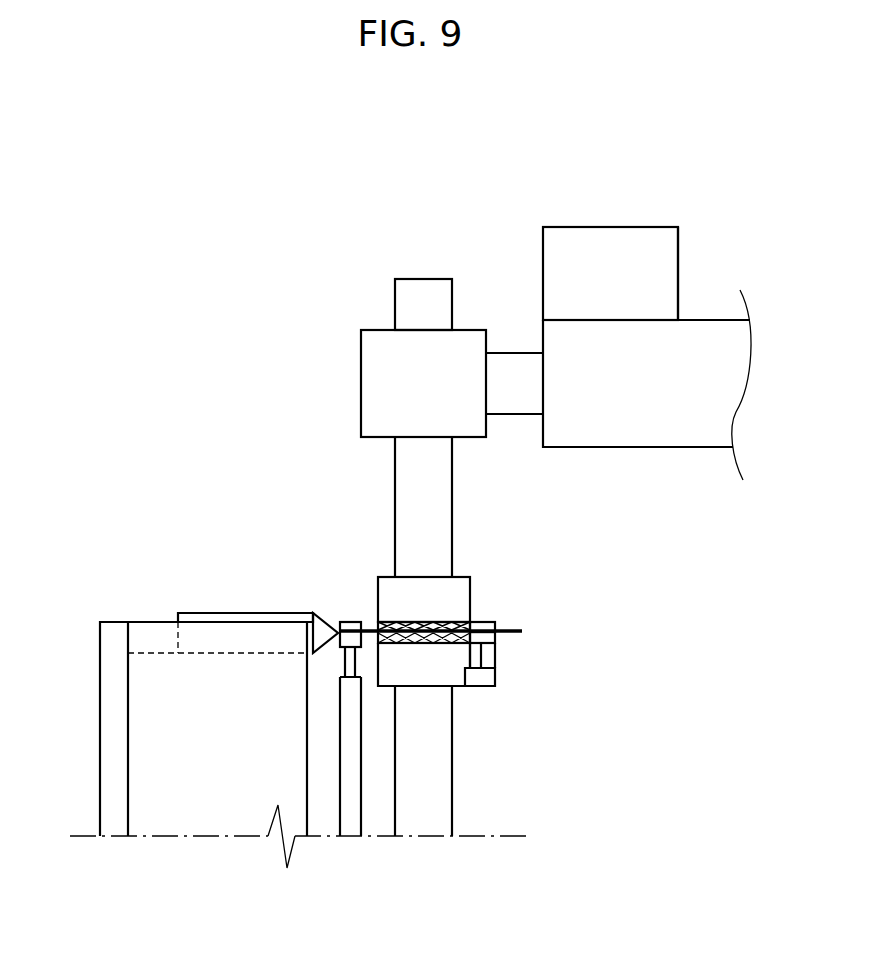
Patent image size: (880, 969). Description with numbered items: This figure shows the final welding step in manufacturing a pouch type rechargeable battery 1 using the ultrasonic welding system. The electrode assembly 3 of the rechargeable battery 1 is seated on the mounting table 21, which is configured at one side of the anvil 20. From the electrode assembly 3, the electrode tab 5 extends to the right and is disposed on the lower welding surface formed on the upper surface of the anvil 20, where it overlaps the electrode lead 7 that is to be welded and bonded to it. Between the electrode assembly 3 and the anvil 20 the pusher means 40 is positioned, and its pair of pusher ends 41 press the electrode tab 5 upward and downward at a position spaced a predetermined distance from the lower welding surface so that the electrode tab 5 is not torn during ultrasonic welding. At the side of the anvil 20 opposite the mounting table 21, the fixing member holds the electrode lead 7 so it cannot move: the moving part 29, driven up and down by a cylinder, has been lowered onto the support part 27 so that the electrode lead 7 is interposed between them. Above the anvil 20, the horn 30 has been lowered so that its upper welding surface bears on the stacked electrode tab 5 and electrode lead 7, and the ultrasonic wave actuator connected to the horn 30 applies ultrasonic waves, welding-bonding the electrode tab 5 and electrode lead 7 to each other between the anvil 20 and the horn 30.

The rechargeable battery 1 is at (172, 607).
The electrode assembly 3 is at (248, 613).
The electrode tab 5 is at (370, 628).
The electrode lead 7 is at (522, 631).
The anvil 20 is at (427, 670).
The mounting table 21 is at (196, 817).
The support part 27 is at (498, 640).
The moving part 29 is at (487, 622).
The horn 30 is at (332, 281).
The pusher means 40 is at (350, 823).
The pusher ends 41 is at (343, 640).